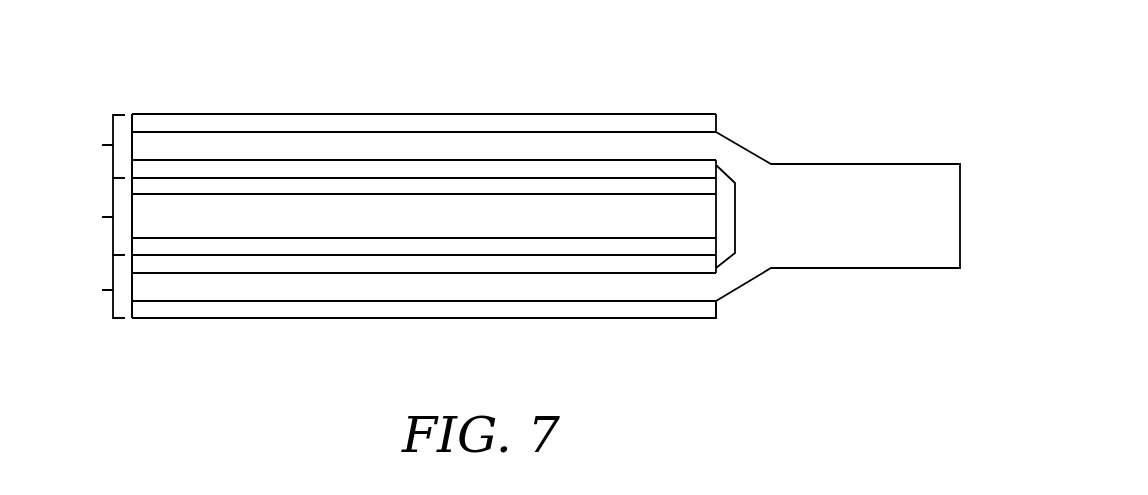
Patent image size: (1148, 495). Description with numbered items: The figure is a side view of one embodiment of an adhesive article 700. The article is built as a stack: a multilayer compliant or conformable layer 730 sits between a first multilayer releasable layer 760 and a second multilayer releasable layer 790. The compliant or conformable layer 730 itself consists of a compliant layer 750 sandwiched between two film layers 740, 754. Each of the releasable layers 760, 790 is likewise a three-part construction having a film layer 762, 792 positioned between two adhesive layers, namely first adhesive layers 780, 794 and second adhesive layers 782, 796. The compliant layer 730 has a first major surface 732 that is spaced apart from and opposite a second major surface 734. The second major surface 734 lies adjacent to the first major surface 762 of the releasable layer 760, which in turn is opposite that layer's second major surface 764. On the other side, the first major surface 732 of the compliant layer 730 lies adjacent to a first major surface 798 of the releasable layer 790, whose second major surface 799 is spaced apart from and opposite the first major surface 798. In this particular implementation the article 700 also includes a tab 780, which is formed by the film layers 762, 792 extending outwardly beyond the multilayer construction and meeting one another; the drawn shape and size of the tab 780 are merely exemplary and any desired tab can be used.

The adhesive article 700 is at (762, 38).
The multilayer compliant or conformable layer 730 is at (93, 216).
The first major surface of compliant layer 732 is at (155, 178).
The second major surface of compliant layer 734 is at (157, 258).
The film layer 740 is at (322, 188).
The compliant layer 750 is at (275, 228).
The film layer 754 is at (333, 247).
The first multilayer releasable layer 760 is at (93, 286).
The film layer / first major surface of releasable layer 762 is at (261, 148).
The second major surface of releasable layer 764 is at (567, 320).
The first adhesive layer / tab 780 is at (447, 125).
The second adhesive layer 782 is at (382, 170).
The second multilayer releasable layer 790 is at (93, 146).
The film layer 792 is at (268, 287).
The first adhesive layer 794 is at (392, 263).
The second adhesive layer 796 is at (478, 310).
The first major surface of releasable layer 790 798 is at (610, 170).
The second major surface of releasable layer 790 799 is at (540, 113).